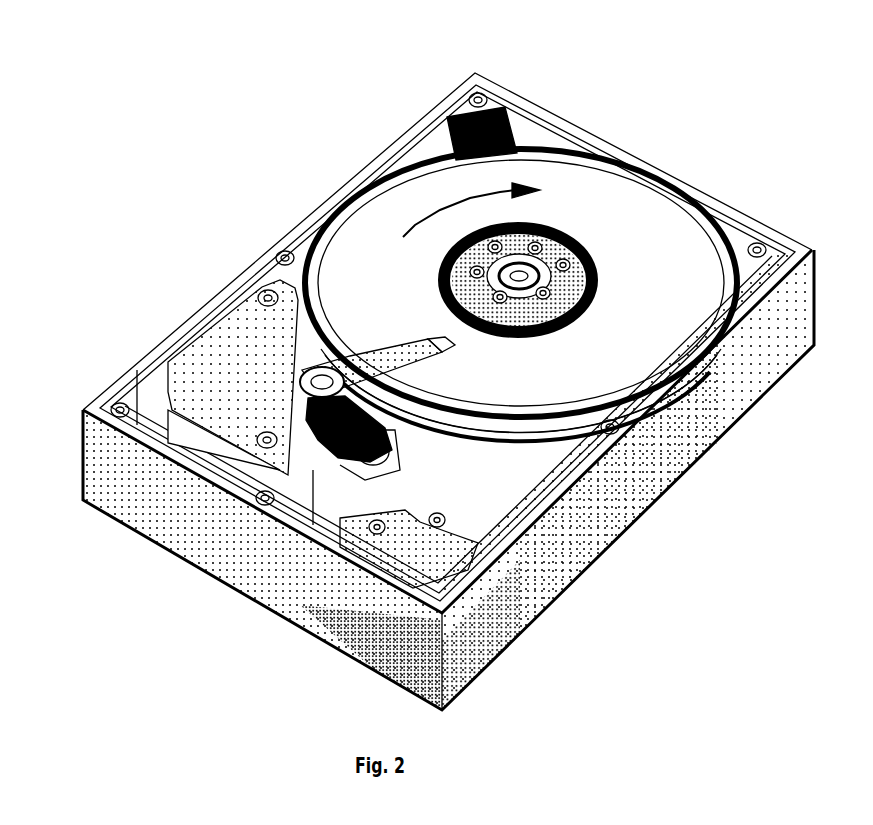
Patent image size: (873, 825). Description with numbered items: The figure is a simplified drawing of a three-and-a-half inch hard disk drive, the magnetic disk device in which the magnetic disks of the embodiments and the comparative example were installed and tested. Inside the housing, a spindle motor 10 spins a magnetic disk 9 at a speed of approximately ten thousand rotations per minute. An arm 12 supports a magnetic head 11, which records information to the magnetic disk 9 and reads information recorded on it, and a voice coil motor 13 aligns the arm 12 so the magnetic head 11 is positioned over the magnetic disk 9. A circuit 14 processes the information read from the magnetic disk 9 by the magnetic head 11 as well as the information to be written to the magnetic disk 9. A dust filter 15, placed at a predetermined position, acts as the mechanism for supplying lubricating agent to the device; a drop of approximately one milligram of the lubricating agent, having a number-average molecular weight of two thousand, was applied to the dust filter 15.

The magnetic disk 9 is at (647, 347).
The spindle motor 10 is at (573, 240).
The magnetic head 11 is at (508, 334).
The arm 12 is at (452, 363).
The voice coil motor 13 is at (232, 373).
The circuit 14 is at (427, 550).
The dust filter 15 is at (508, 115).